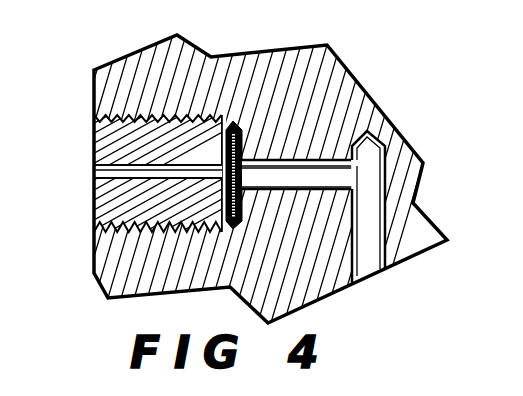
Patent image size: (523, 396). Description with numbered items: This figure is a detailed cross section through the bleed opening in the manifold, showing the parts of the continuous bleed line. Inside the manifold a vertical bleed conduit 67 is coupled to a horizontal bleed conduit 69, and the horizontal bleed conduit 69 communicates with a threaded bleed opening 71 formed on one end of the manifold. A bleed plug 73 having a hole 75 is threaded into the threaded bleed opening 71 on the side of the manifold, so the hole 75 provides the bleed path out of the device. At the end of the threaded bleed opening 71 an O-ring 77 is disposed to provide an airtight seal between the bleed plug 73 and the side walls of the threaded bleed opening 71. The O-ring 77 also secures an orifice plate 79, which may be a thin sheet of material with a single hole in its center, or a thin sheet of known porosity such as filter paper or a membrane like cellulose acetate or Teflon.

The vertical bleed conduit 67 is at (368, 257).
The horizontal bleed conduit 69 is at (318, 152).
The threaded bleed opening 71 is at (158, 130).
The bleed plug 73 is at (117, 208).
The hole 75 is at (100, 175).
The O-ring 77 is at (238, 123).
The orifice plate 79 is at (232, 138).